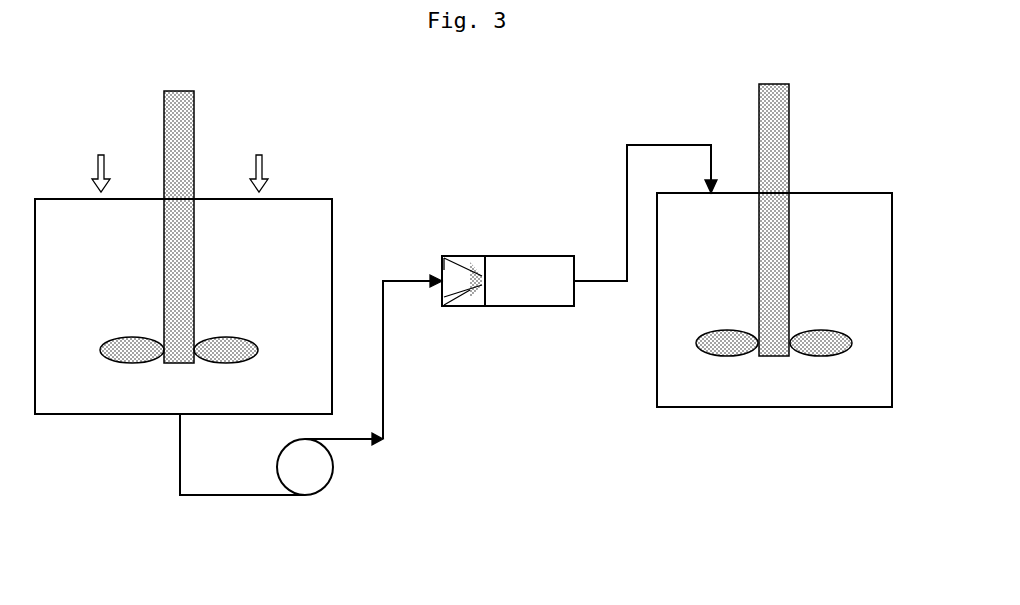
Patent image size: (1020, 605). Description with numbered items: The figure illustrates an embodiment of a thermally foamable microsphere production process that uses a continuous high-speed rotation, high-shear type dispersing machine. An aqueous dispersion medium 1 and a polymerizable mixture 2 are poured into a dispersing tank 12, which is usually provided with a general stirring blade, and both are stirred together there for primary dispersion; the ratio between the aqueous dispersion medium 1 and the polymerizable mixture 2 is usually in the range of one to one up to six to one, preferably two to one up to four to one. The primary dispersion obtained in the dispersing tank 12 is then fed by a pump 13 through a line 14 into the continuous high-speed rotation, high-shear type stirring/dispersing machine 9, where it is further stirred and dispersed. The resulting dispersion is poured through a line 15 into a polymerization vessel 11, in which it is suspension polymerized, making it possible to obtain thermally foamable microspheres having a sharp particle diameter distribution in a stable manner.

The aqueous dispersion medium 1 is at (101, 157).
The polymerizable mixture 2 is at (259, 157).
The continuous high-speed rotation, high-shear type stirring/dispersing machine 9 is at (520, 307).
The polymerization vessel 11 is at (787, 408).
The dispersing tank 12 is at (333, 240).
The pump 13 is at (334, 470).
The line 14 is at (384, 357).
The line 15 is at (626, 176).